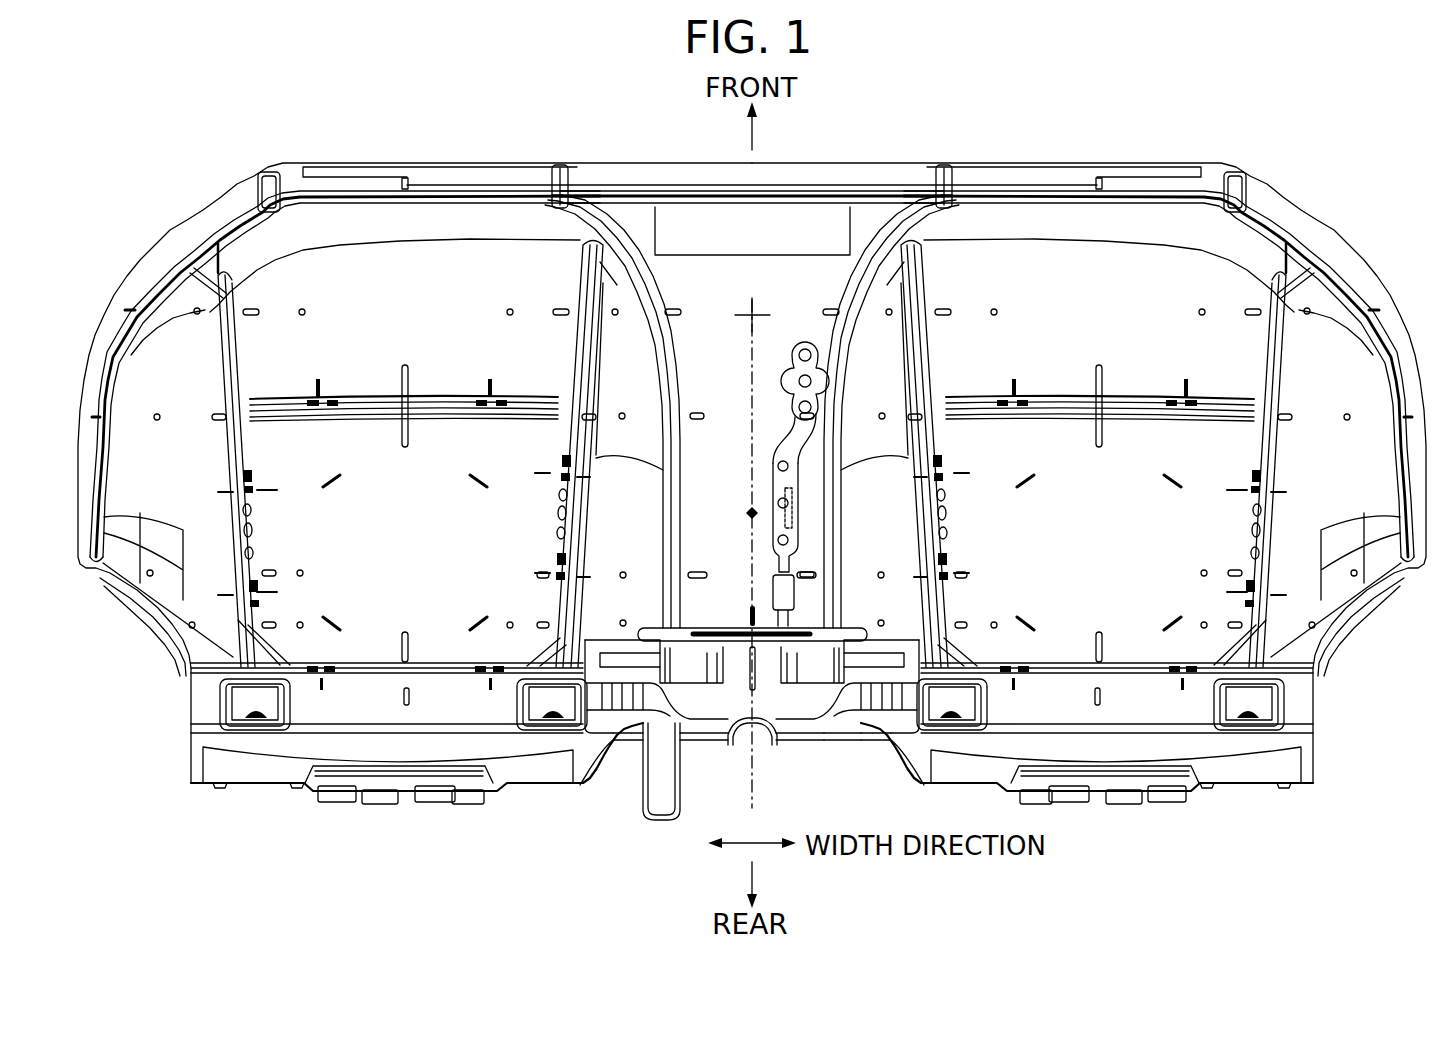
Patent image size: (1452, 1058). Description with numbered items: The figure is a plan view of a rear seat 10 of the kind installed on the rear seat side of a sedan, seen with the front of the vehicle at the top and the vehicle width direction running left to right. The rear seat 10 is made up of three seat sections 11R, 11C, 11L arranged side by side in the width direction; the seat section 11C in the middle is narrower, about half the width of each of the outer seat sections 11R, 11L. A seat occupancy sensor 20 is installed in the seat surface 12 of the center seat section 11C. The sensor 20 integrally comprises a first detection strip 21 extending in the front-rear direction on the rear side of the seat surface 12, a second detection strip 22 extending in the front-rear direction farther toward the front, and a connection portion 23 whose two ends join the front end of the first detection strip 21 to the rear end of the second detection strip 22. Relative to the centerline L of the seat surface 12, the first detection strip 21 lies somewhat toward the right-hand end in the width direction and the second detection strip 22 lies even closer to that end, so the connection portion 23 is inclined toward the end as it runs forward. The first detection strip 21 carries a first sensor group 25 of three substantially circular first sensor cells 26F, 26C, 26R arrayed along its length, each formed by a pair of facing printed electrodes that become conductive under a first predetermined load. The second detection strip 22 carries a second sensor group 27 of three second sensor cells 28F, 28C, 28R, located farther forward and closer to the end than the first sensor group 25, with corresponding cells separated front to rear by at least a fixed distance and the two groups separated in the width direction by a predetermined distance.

The rear seat 10 is at (1216, 154).
The seat section 11L is at (441, 212).
The seat section 11C is at (799, 227).
The seat section 11R is at (1040, 212).
The seat surface 12 is at (677, 268).
The seat occupancy sensor 20 is at (794, 326).
The first detection strip 21 is at (797, 480).
The second detection strip 22 is at (818, 372).
The connection portion 23 is at (806, 449).
The first sensor group 25 is at (700, 545).
The first sensor cell 26F is at (778, 465).
The first sensor cell 26C is at (778, 502).
The first sensor cell 26R is at (778, 540).
The second sensor group 27 is at (725, 338).
The second sensor cell 28F is at (798, 355).
The second sensor cell 28C is at (798, 381).
The second sensor cell 28R is at (798, 407).
The centerline L is at (753, 782).